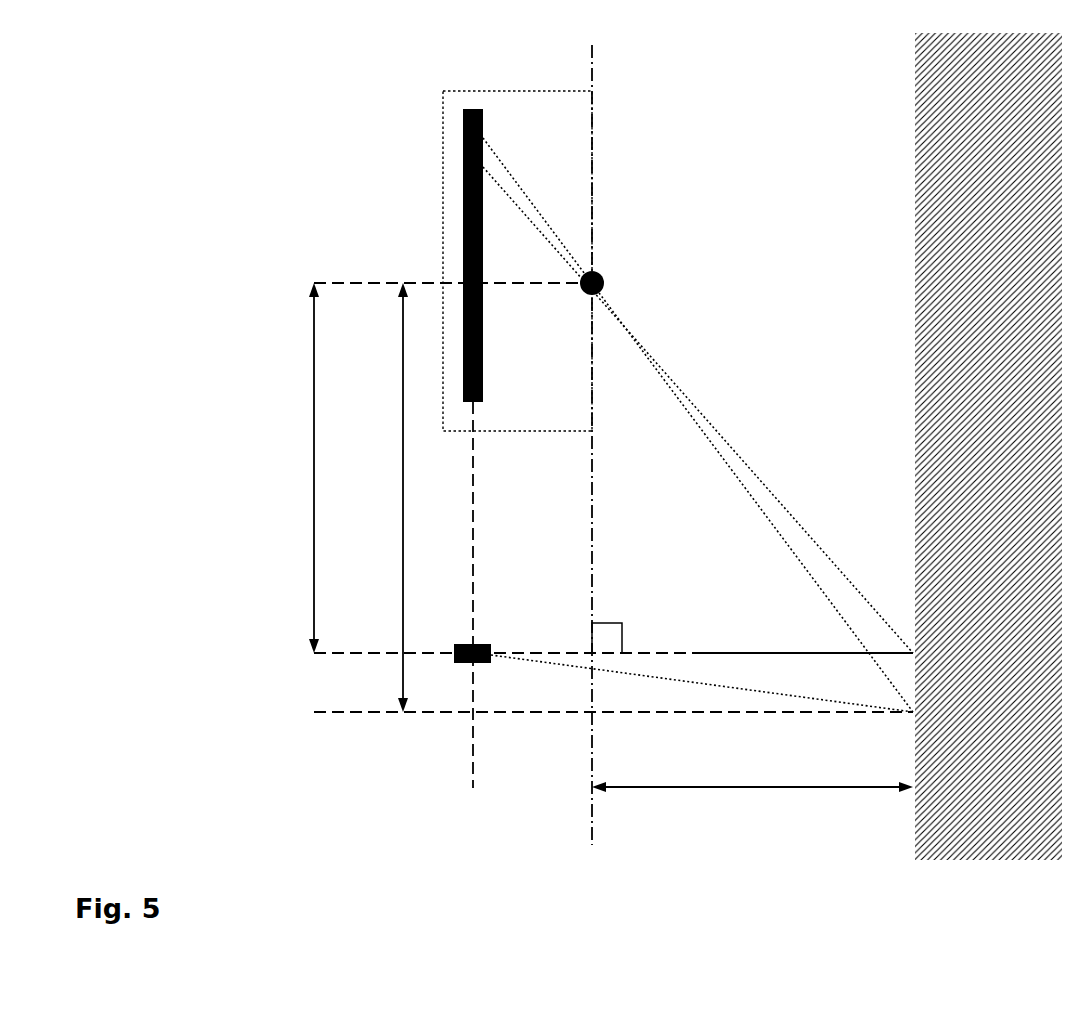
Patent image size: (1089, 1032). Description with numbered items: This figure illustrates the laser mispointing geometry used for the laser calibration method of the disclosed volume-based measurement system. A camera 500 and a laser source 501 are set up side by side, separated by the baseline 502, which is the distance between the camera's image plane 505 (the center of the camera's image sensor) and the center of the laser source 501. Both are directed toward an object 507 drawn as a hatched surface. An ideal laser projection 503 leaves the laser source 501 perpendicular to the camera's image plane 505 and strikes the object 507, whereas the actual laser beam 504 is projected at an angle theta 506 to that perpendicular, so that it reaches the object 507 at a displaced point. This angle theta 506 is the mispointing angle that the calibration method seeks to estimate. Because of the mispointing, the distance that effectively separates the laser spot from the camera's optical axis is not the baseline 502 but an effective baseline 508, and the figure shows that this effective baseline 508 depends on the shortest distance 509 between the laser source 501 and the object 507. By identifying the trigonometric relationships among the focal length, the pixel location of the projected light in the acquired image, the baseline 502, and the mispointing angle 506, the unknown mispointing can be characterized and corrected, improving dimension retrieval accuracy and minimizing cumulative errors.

The camera 500 is at (517, 91).
The laser source 501 is at (466, 663).
The baseline 502 is at (314, 440).
The laser projection 503 is at (710, 653).
The actual laser beam 504 is at (715, 686).
The camera's image plane 505 is at (483, 212).
The angle theta 506 is at (822, 660).
The object 507 is at (915, 154).
The effective baseline 508 is at (403, 376).
The shortest distance 509 is at (797, 787).